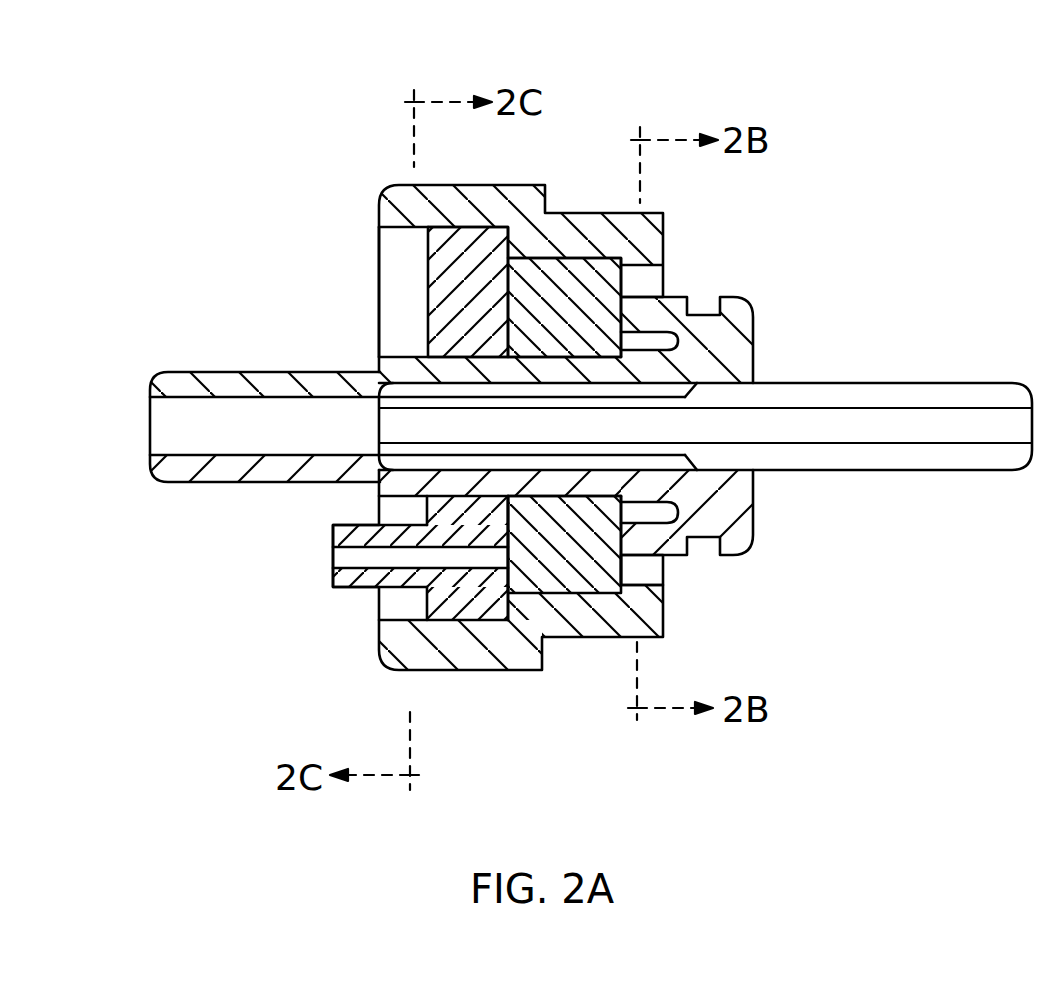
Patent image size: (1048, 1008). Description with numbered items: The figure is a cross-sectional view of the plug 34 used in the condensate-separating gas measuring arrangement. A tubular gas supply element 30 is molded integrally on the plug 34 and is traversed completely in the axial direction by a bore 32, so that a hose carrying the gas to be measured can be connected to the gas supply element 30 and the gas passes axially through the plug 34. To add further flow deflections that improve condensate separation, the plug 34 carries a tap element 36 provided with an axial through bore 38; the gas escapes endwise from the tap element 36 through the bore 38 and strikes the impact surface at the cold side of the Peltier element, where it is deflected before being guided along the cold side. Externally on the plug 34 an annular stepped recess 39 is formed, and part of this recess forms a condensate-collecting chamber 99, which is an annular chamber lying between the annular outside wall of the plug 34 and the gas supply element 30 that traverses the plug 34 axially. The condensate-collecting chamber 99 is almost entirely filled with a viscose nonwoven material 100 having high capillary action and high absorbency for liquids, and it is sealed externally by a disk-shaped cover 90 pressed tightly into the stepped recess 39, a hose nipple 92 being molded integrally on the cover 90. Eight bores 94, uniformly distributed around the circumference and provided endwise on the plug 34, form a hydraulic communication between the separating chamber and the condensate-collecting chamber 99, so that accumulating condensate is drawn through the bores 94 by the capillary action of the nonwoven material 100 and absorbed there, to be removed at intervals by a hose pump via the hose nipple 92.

The tubular gas supply element 30 is at (215, 377).
The bore 32 is at (280, 413).
The plug 34 is at (533, 193).
The tap element 36 is at (817, 392).
The axial through bore 38 is at (1000, 414).
The annular stepped recess 39 is at (395, 252).
The disk-shaped cover 90 is at (450, 238).
The hose nipple 92 is at (343, 556).
The bores 94 is at (650, 572).
The condensate-collecting chamber 99 is at (558, 568).
The nonwoven material 100 is at (521, 556).